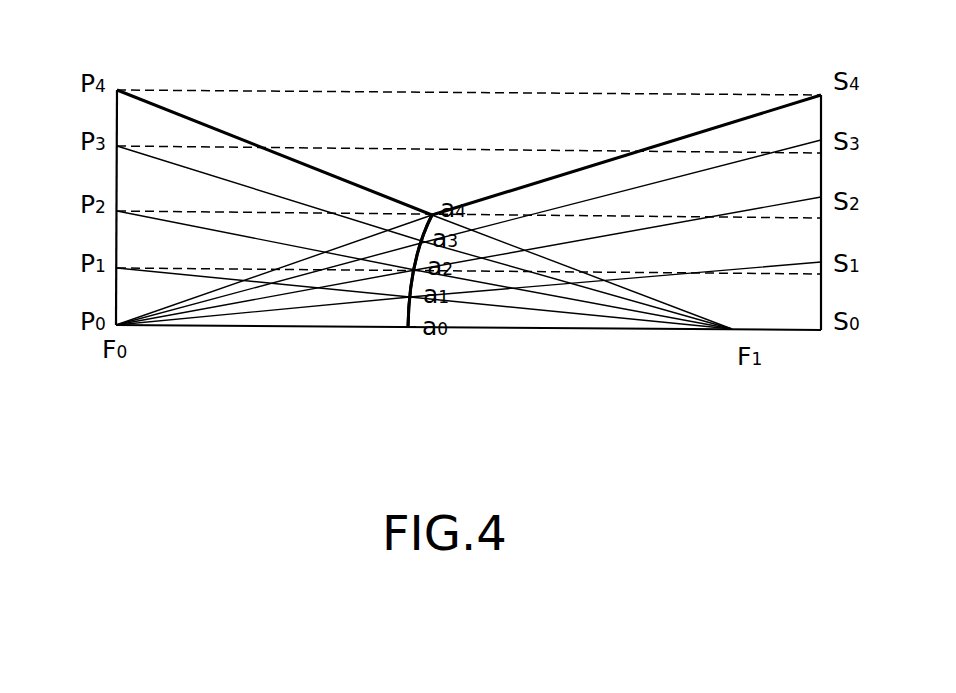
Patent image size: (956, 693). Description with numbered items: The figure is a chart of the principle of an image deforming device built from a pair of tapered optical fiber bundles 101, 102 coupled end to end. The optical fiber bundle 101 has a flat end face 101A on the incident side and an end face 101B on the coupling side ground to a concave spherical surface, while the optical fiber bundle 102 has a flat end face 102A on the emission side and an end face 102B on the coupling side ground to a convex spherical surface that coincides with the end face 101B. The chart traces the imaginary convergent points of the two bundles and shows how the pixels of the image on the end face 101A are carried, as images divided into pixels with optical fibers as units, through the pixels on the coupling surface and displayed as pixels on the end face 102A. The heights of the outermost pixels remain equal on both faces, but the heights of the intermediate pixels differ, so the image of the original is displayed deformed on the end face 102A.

The tapered optical fiber bundle 101 is at (227, 142).
The tapered optical fiber bundle 102 is at (723, 125).
The end face on the incident side 101A is at (113, 290).
The end face on the emission side 102A is at (823, 283).
The end face on the coupling side 101B is at (403, 315).
The end face on the coupling side 102B is at (417, 305).